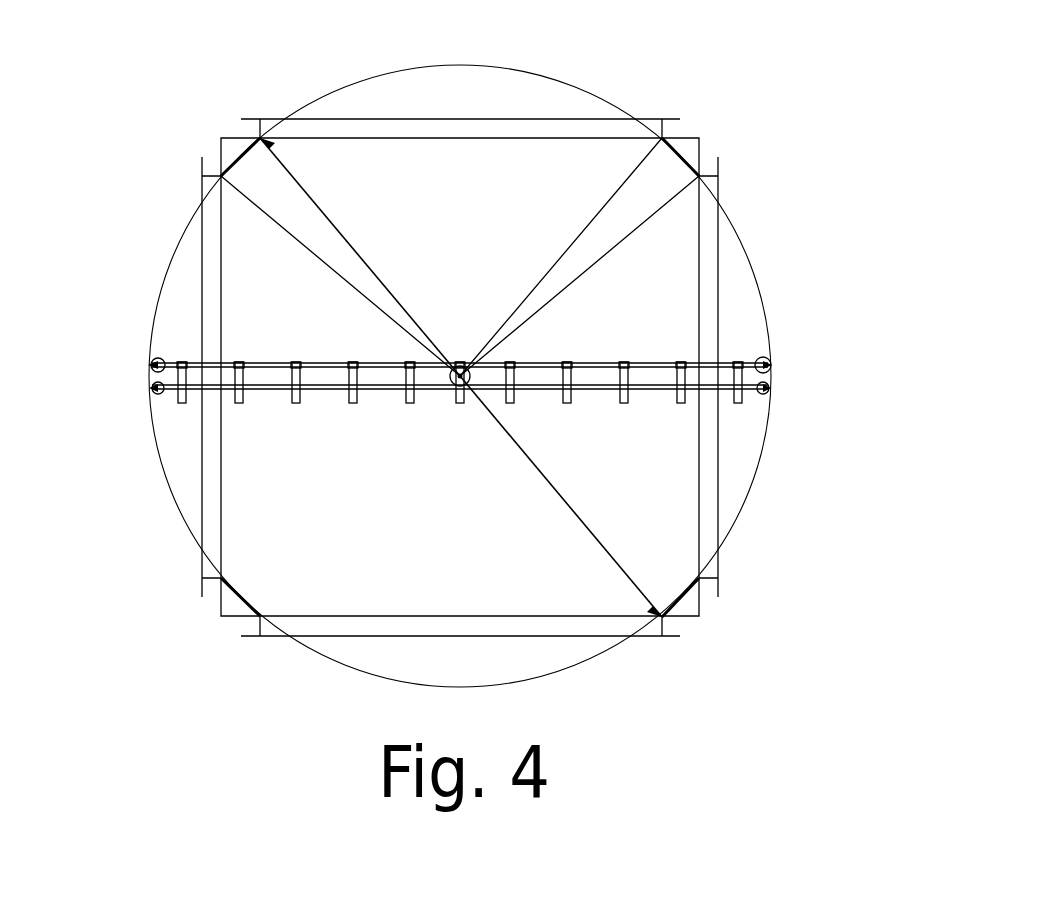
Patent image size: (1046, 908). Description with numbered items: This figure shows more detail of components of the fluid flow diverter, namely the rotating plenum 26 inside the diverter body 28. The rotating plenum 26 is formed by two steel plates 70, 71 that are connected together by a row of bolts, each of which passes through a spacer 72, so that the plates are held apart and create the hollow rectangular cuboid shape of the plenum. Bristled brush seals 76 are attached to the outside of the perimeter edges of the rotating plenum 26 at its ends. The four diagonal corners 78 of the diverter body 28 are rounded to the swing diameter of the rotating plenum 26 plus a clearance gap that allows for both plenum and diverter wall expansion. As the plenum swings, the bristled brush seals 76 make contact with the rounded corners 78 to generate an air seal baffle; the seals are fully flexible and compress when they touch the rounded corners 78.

The rotating plenum 26 is at (338, 378).
The diverter body 28 is at (662, 617).
The steel plate 70 is at (267, 390).
The steel plate 71 is at (268, 365).
The spacer 72 is at (678, 373).
The bristled brush seal 76 is at (771, 365).
The rounded corner 78 is at (221, 138).